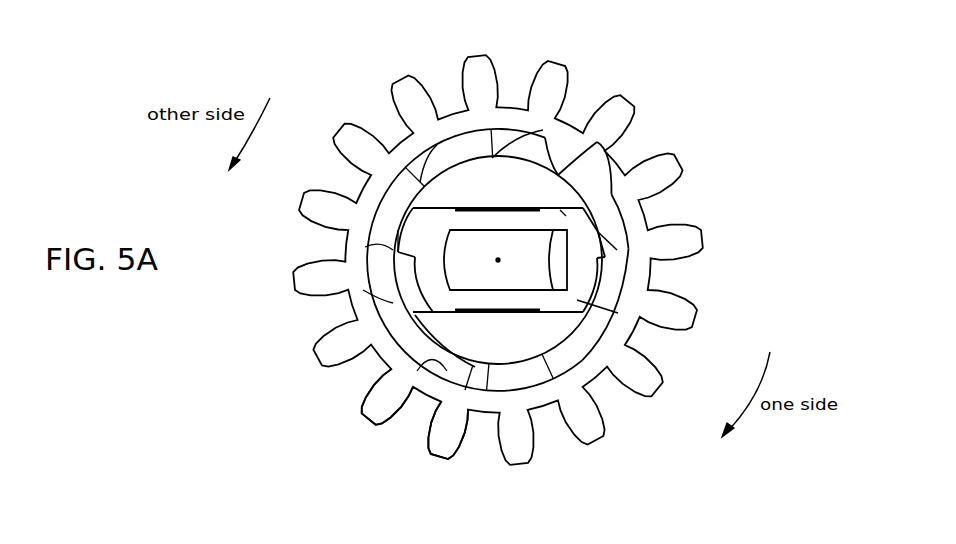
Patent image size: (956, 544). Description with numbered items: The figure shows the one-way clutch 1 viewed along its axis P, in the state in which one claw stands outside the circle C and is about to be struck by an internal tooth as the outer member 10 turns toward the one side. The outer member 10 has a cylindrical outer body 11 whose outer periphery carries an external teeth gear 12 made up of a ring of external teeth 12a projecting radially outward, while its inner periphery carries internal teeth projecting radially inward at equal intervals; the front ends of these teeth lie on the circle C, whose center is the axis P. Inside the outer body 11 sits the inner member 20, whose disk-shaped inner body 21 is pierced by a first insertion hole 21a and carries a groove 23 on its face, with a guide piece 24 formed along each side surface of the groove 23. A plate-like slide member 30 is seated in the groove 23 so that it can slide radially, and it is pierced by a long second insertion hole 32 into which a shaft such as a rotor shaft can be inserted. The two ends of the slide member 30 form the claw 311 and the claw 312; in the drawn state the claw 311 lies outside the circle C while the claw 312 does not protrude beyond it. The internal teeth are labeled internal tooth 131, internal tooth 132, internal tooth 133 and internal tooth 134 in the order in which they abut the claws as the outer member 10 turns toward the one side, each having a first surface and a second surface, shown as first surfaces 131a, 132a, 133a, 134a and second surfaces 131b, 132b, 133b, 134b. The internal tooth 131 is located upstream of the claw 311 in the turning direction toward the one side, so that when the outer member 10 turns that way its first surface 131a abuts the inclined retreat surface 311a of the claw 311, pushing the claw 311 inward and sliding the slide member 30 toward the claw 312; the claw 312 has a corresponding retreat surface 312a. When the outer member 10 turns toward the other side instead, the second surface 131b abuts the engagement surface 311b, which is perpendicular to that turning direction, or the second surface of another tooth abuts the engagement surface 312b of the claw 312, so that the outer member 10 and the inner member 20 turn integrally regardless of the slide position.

The one-way clutch 1 is at (363, 100).
The outer member 10 is at (416, 406).
The outer body 11 is at (620, 322).
The external teeth gear 12 is at (365, 424).
The external teeth 12a is at (438, 455).
The inner member 20 is at (593, 367).
The inner body 21 is at (472, 175).
The first insertion hole 21a is at (537, 340).
The groove 23 is at (415, 225).
The guide piece 24 is at (498, 313).
The slide member 30 is at (443, 213).
The second insertion hole 32 is at (526, 300).
The internal tooth 131 is at (625, 235).
The first surface 131a is at (628, 320).
The second surface 131b is at (632, 208).
The internal tooth 132 is at (393, 313).
The second arm end 132a is at (390, 280).
The second arm base 132b is at (385, 347).
The internal tooth 133 is at (577, 163).
The third arm end 133a is at (610, 167).
The third arm base 133b is at (560, 165).
The internal tooth 134 is at (447, 352).
The fourth arm end 134a is at (430, 358).
The fourth arm base 134b is at (480, 375).
The claw 311 is at (650, 276).
The retreat surface 311a is at (633, 252).
The engagement surface 311b is at (637, 300).
The claw 312 is at (395, 260).
The third engaging surface 312a is at (395, 293).
The engagement surface 312b is at (400, 247).
The axis P is at (495, 260).
The circle C is at (563, 213).